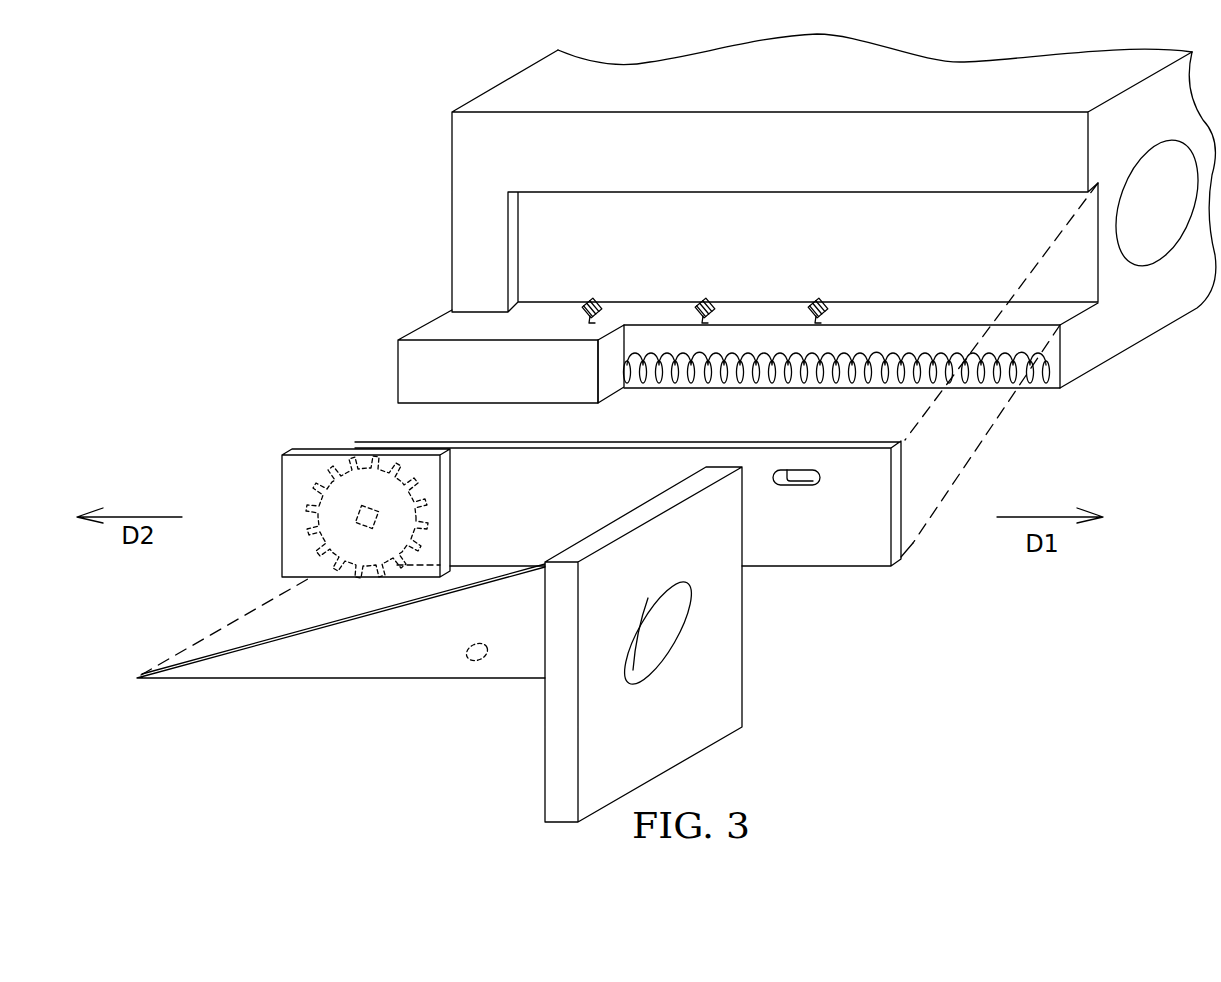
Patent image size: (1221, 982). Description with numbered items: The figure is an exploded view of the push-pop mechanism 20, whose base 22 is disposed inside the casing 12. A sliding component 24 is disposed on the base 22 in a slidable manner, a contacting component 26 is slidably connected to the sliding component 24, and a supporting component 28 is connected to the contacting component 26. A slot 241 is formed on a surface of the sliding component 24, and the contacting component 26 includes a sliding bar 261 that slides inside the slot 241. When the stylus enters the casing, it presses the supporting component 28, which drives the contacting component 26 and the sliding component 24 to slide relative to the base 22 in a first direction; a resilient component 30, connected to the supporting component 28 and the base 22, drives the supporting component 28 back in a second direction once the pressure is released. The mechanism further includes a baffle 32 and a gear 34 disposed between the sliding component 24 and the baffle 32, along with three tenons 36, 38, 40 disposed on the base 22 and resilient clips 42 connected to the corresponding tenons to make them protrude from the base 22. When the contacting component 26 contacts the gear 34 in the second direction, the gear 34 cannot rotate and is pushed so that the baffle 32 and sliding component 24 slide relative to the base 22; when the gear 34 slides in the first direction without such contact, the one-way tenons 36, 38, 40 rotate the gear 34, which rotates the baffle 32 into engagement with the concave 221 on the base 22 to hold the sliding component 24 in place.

The push-pop mechanism 20 is at (364, 178).
The casing 12 is at (463, 233).
The base 22 is at (413, 371).
The concave 221 is at (623, 347).
The sliding component 24 is at (853, 543).
The slot 241 is at (800, 479).
The contacting component 26 is at (340, 660).
The sliding bar 261 is at (470, 663).
The supporting component 28 is at (727, 677).
The resilient component 30 is at (1046, 388).
The baffle 32 is at (310, 556).
The gear 34 is at (313, 480).
The tenon 36 is at (590, 300).
The tenon 38 is at (703, 300).
The tenon 40 is at (815, 300).
The resilient clip 42 is at (820, 324).